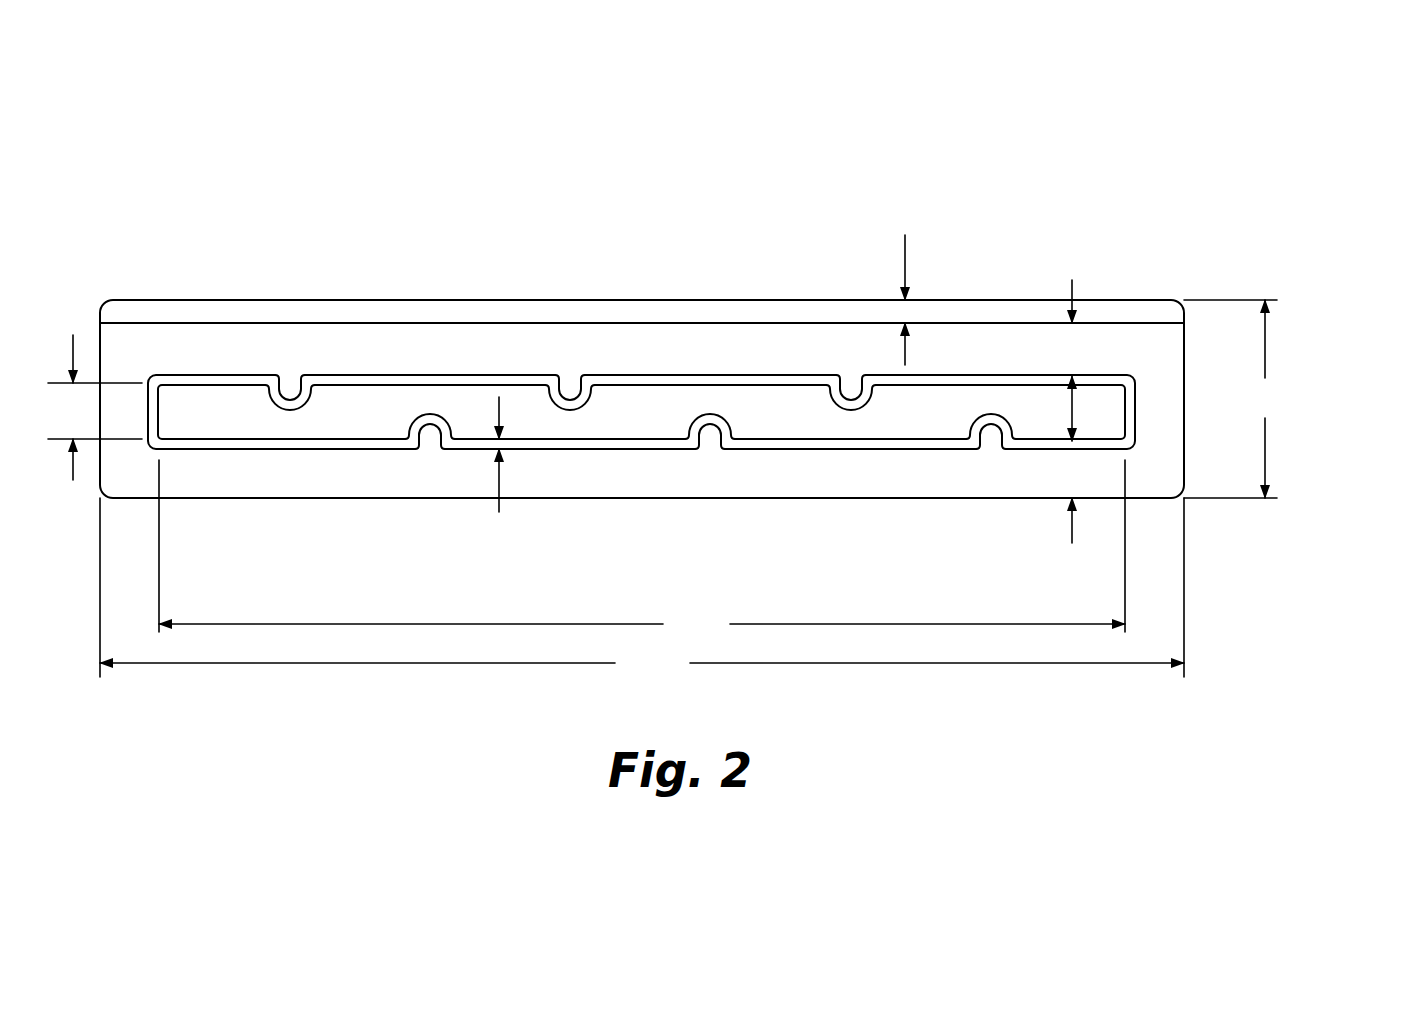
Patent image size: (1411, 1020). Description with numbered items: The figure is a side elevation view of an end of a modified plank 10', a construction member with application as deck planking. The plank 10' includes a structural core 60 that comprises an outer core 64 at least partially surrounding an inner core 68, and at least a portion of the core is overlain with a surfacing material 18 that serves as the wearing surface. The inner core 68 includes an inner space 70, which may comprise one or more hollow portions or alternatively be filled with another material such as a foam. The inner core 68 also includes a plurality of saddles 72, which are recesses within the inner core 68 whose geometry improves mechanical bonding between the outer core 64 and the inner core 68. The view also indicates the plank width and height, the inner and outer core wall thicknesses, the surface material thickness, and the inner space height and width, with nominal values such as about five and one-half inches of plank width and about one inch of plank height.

The plank 10' is at (716, 364).
The surfacing material 18 is at (969, 318).
The structural core 60 is at (1213, 348).
The outer core 64 is at (384, 349).
The inner core 68 is at (542, 374).
The inner space 70 is at (240, 418).
The saddles 72 is at (290, 372).